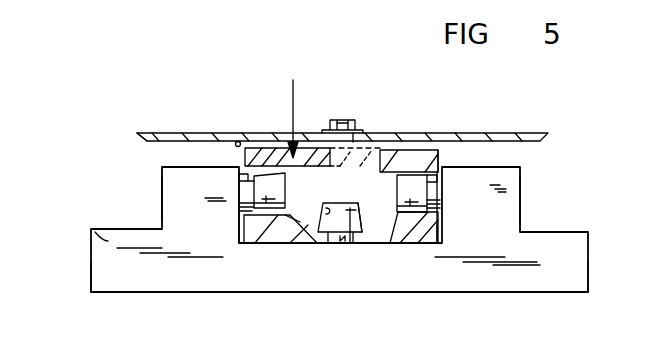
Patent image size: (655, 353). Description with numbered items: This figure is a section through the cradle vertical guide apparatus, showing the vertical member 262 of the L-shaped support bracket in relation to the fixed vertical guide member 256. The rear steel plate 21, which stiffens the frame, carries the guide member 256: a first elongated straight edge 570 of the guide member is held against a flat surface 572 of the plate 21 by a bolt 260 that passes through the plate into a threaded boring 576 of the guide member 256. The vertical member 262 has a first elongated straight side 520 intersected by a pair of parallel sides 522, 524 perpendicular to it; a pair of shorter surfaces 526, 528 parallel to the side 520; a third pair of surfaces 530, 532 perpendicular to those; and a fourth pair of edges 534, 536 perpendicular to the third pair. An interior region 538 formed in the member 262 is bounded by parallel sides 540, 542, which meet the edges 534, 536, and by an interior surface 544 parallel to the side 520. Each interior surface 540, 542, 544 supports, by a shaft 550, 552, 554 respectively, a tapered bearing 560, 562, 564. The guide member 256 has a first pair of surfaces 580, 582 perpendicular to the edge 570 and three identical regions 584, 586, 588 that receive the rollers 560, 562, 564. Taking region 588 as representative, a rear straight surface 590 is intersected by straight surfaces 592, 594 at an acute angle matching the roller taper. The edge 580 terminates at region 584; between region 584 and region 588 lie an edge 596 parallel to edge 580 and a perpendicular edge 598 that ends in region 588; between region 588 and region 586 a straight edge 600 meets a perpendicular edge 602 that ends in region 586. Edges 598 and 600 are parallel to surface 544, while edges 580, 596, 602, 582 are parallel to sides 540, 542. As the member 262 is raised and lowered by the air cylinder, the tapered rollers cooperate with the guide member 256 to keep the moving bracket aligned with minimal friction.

The rear steel plate 21 is at (232, 138).
The fixed vertical guide member 256 is at (300, 109).
The bolt 260 is at (348, 120).
The vertical member 262 is at (107, 241).
The first elongated straight side 520 is at (466, 293).
The parallel side 522 is at (92, 270).
The parallel side 524 is at (588, 255).
The shorter surface 526 is at (124, 229).
The shorter surface 528 is at (553, 232).
The third pair surface 530 is at (162, 192).
The third pair surface 532 is at (521, 188).
The fourth pair edge 534 is at (197, 167).
The fourth pair edge 536 is at (492, 167).
The interior region 538 is at (460, 167).
The interior parallel side 540 is at (244, 183).
The interior parallel side 542 is at (434, 222).
The interior surface 544 is at (325, 243).
The shaft 550 is at (240, 207).
The shaft 552 is at (436, 198).
The shaft 554 is at (368, 243).
The tapered bearing 560 is at (262, 210).
The tapered bearing 562 is at (409, 161).
The tapered bearing 564 is at (405, 227).
The first elongated straight edge 570 is at (322, 132).
The flat surface 572 is at (235, 138).
The threaded boring 576 is at (356, 140).
The first pair surface 580 is at (242, 141).
The first pair surface 582 is at (441, 147).
The region 584 is at (245, 156).
The region 586 is at (348, 152).
The region 588 is at (284, 215).
The rear straight surface 590 is at (337, 214).
The straight surface 592 is at (330, 160).
The straight surface 594 is at (362, 220).
The edge 596 is at (236, 226).
The edge 598 is at (296, 243).
The straight edge 600 is at (410, 245).
The edge 602 is at (440, 230).